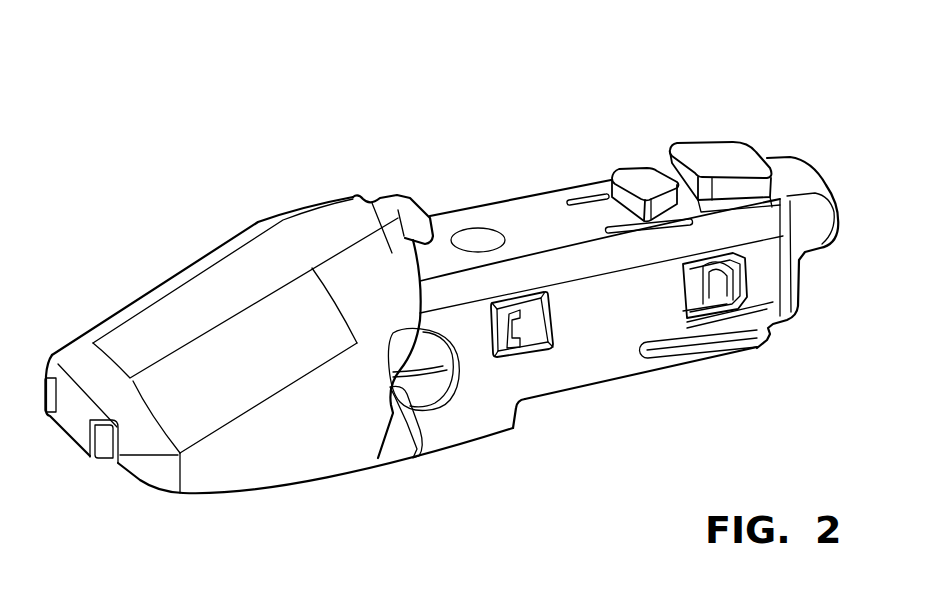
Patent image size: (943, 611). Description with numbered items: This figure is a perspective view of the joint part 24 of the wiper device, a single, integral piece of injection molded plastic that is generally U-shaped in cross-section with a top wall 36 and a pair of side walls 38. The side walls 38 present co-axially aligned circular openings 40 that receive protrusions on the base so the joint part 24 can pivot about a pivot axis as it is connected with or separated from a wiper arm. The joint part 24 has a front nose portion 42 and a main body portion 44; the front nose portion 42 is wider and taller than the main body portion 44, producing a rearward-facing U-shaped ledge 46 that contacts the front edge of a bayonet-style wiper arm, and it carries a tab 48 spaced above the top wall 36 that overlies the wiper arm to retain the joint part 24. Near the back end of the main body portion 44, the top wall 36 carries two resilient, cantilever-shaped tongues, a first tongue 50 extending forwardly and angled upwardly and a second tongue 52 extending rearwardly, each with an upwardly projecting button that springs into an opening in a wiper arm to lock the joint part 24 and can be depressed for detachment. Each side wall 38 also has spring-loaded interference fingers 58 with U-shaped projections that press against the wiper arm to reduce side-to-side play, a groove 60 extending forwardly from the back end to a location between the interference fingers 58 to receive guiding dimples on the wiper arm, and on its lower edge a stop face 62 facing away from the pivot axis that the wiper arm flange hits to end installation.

The joint part 24 is at (134, 247).
The top wall 36 is at (510, 306).
The side walls 38 is at (603, 347).
The circular openings 40 is at (400, 462).
The front nose portion 42 is at (212, 427).
The main body portion 44 is at (538, 220).
The U-shaped ledge 46 is at (400, 412).
The tab 48 is at (397, 207).
The first tongue 50 is at (710, 152).
The second tongue 52 is at (630, 177).
The interference fingers 58 is at (497, 357).
The groove 60 is at (658, 350).
The stop face 62 is at (517, 417).